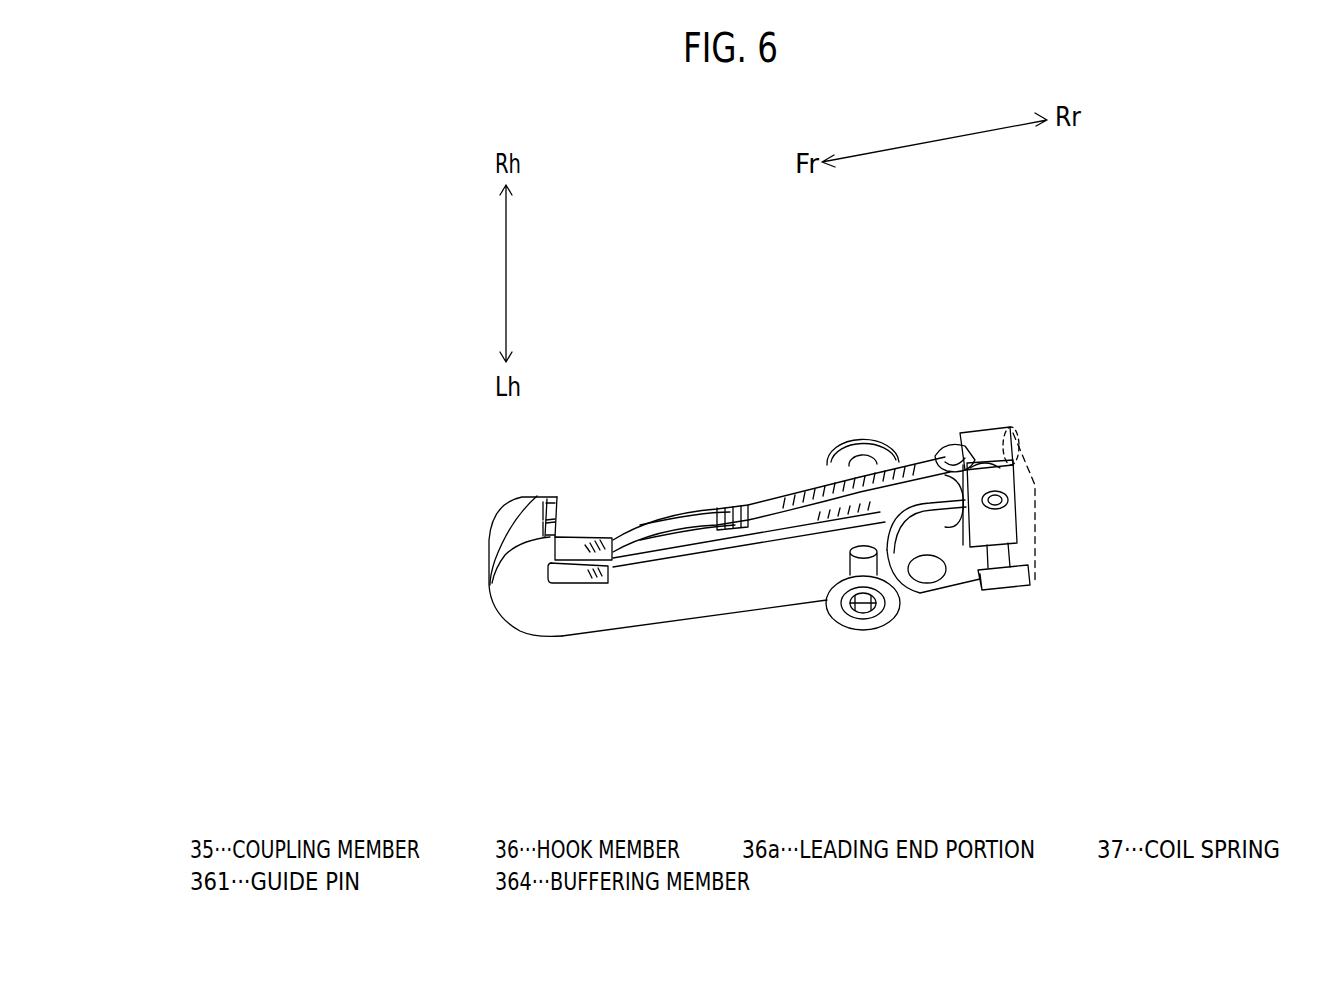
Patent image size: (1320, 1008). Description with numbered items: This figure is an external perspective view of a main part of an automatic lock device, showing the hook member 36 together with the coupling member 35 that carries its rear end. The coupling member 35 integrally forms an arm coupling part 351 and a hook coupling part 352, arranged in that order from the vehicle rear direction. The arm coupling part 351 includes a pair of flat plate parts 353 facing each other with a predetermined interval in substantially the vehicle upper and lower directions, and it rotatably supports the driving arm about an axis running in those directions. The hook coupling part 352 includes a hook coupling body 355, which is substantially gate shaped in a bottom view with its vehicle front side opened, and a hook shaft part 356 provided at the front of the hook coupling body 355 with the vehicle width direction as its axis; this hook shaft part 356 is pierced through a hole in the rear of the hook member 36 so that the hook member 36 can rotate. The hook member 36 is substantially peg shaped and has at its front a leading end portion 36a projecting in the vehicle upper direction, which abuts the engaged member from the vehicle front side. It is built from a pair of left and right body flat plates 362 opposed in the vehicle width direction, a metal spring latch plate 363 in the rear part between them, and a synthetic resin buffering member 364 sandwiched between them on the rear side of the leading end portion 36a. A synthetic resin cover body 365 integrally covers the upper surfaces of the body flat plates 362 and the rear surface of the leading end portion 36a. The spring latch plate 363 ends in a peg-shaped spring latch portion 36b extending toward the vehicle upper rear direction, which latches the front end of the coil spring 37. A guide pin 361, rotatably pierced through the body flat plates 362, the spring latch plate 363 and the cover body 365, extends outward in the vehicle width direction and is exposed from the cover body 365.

The coupling member 35 is at (1031, 583).
The hook member 36 is at (715, 543).
The leading end portion 36a is at (520, 525).
The spring latch portion 36b is at (950, 446).
The coil spring 37 is at (991, 418).
The arm coupling part 351 is at (1033, 596).
The hook coupling part 352 is at (948, 616).
The flat plate parts 353 is at (1010, 540).
The hook coupling body 355 is at (960, 580).
The hook shaft part 356 is at (925, 578).
The guide pin 361 is at (861, 620).
The body flat plates 362 is at (595, 552).
The spring latch plate 363 is at (916, 441).
The buffering member 364 is at (662, 525).
The cover body 365 is at (703, 620).